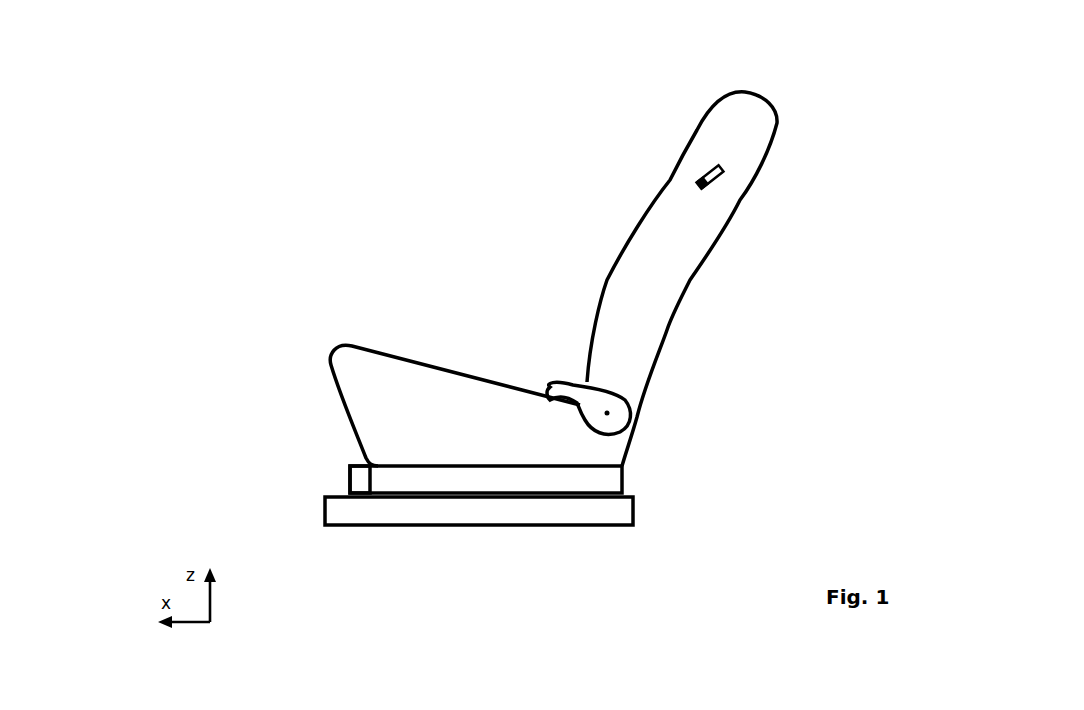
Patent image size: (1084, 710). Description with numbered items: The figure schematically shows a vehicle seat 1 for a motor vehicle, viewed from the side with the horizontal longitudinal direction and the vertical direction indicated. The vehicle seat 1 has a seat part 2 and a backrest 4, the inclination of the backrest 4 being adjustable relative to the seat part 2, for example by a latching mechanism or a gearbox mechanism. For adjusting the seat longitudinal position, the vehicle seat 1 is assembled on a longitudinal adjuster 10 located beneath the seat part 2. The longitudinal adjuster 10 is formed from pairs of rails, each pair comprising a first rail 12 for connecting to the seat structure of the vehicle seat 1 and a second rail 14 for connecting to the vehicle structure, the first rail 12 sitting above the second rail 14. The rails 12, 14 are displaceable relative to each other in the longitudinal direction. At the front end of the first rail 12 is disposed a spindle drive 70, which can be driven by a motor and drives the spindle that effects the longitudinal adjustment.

The vehicle seat 1 is at (448, 173).
The seat part 2 is at (430, 398).
The backrest 4 is at (657, 235).
The longitudinal adjuster 10 is at (334, 456).
The first rail 12 is at (613, 480).
The second rail 14 is at (622, 510).
The spindle drive 70 is at (352, 480).